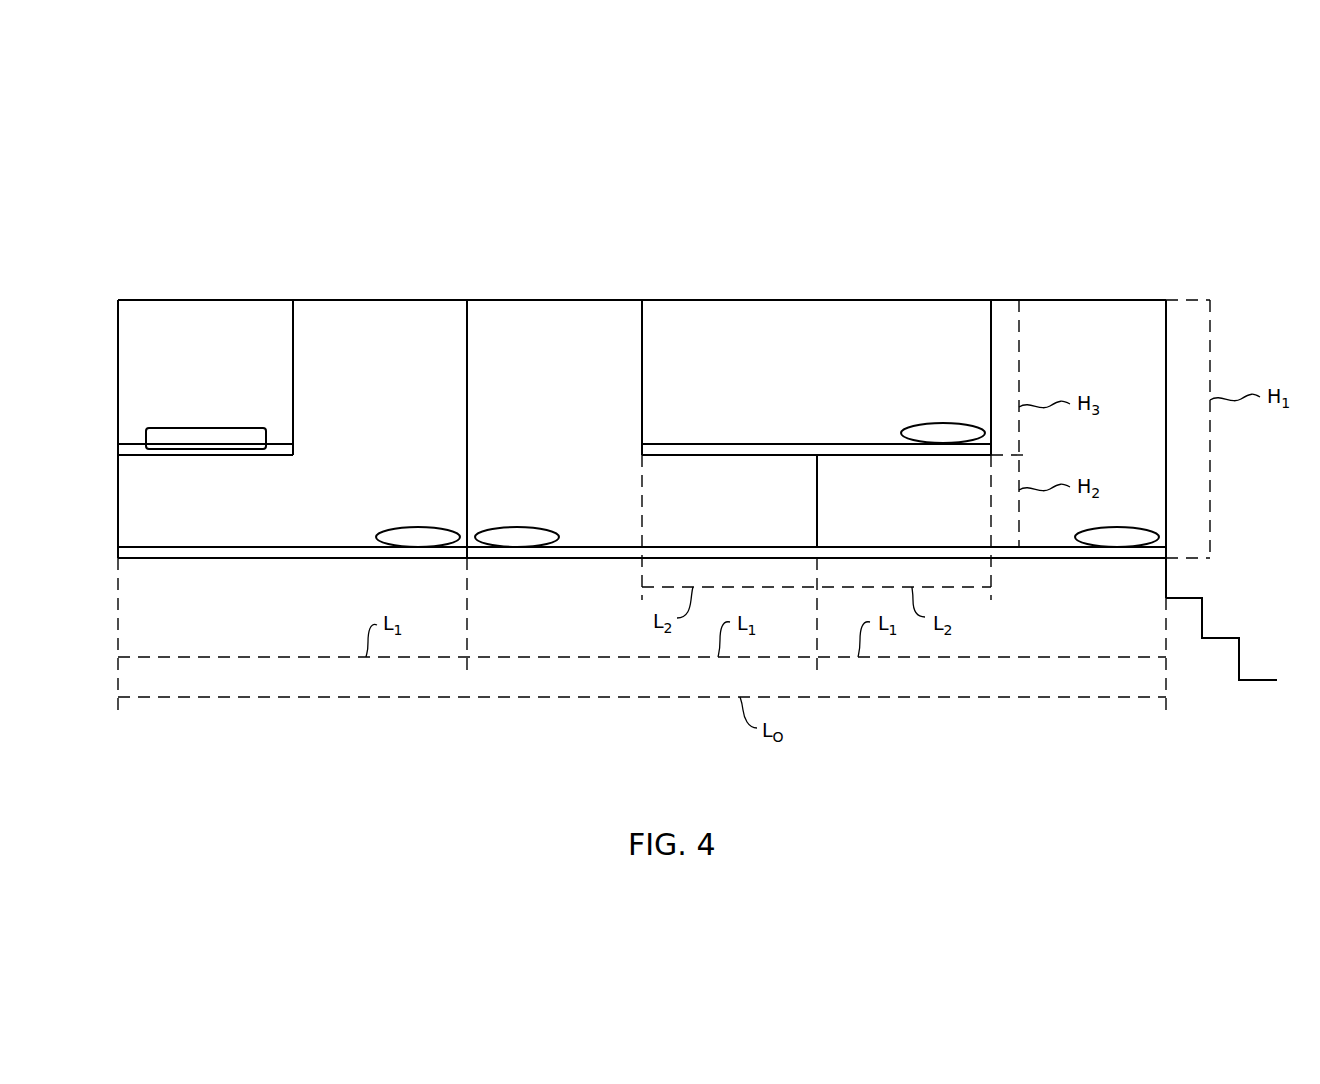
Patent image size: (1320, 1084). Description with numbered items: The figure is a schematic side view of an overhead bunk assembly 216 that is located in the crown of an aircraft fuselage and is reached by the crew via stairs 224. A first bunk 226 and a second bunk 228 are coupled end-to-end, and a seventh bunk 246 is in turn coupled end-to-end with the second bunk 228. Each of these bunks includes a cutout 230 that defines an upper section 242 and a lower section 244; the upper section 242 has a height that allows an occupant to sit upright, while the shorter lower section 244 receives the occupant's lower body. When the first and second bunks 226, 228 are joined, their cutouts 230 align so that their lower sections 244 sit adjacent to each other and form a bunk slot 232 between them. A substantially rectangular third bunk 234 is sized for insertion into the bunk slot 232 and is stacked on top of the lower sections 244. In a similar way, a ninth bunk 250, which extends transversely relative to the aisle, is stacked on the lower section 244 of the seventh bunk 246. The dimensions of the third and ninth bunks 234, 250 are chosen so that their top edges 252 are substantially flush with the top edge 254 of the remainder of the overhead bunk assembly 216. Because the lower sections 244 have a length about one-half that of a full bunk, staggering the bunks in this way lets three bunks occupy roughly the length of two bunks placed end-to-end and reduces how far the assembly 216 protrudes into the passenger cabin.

The overhead bunk assembly 216 is at (1063, 203).
The stairs 224 is at (1205, 608).
The first bunk 226 is at (978, 558).
The second bunk 228 is at (592, 558).
The cutout 230 is at (245, 468).
The bunk slot 232 is at (976, 277).
The third bunk 234 is at (866, 300).
The upper section 242 is at (399, 377).
The lower section 244 is at (208, 520).
The seventh bunk 246 is at (293, 558).
The ninth bunk 250 is at (197, 300).
The top edge 252 is at (280, 300).
The top edge 254 is at (500, 300).